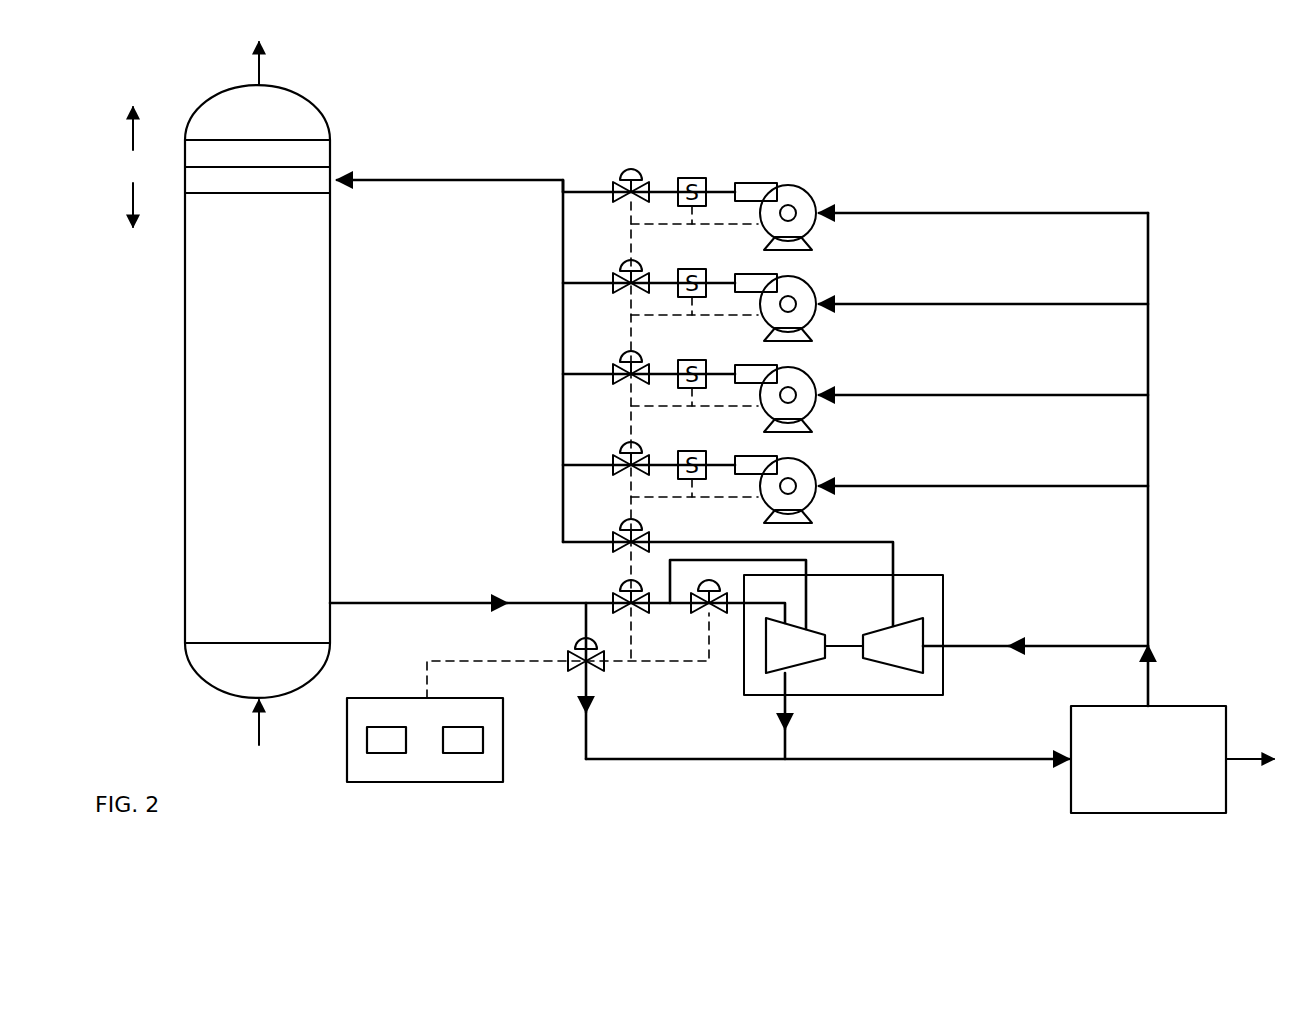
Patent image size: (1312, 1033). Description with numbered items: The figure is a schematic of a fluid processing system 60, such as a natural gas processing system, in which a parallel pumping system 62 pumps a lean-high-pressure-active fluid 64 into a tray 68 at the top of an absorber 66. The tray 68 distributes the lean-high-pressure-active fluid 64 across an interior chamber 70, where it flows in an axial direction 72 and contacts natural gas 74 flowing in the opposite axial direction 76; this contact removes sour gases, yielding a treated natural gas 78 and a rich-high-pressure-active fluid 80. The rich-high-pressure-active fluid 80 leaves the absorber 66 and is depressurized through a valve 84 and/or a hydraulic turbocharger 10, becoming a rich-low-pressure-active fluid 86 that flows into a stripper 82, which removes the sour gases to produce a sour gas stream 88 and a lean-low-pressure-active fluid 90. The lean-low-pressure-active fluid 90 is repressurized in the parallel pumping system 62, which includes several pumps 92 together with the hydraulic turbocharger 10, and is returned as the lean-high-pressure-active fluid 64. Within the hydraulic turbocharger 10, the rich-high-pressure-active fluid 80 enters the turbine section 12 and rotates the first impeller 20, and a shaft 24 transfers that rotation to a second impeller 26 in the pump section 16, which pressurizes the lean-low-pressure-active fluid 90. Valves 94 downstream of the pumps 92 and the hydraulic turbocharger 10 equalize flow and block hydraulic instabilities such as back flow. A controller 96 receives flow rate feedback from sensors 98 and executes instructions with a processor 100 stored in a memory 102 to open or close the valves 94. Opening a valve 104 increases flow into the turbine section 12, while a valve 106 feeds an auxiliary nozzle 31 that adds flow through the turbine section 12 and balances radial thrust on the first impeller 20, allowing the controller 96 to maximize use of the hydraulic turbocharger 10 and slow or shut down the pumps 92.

The hydraulic turbocharger 10 is at (827, 697).
The turbine section 12 is at (765, 647).
The pump section 16 is at (896, 673).
The first impeller 20 is at (810, 627).
The shaft 24 is at (845, 648).
The second impeller 26 is at (912, 618).
The auxiliary nozzle 31 is at (790, 612).
The fluid processing system 60 is at (1040, 144).
The parallel pumping system 62 is at (727, 126).
The lean-high-pressure-active fluid 64 is at (452, 180).
The absorber 66 is at (333, 396).
The tray 68 is at (250, 195).
The interior chamber 70 is at (257, 350).
The axial direction 72 is at (130, 201).
The natural gas 74 is at (257, 730).
The opposite axial direction 76 is at (130, 134).
The treated natural gas 78 is at (261, 66).
The rich-high-pressure-active fluid 80 is at (432, 603).
The stripper 82 is at (1071, 778).
The valve 84 is at (572, 668).
The rich-low-pressure-active fluid 86 is at (718, 762).
The sour gas stream 88 is at (1245, 755).
The lean-low-pressure-active fluid 90 is at (1062, 641).
The pumps 92 is at (806, 190).
The valves 94 is at (622, 175).
The controller 96 is at (425, 783).
The sensors 98 is at (696, 178).
The processor 100 is at (367, 741).
The memory 102 is at (467, 754).
The valve 104 is at (620, 589).
The valve 106 is at (700, 614).